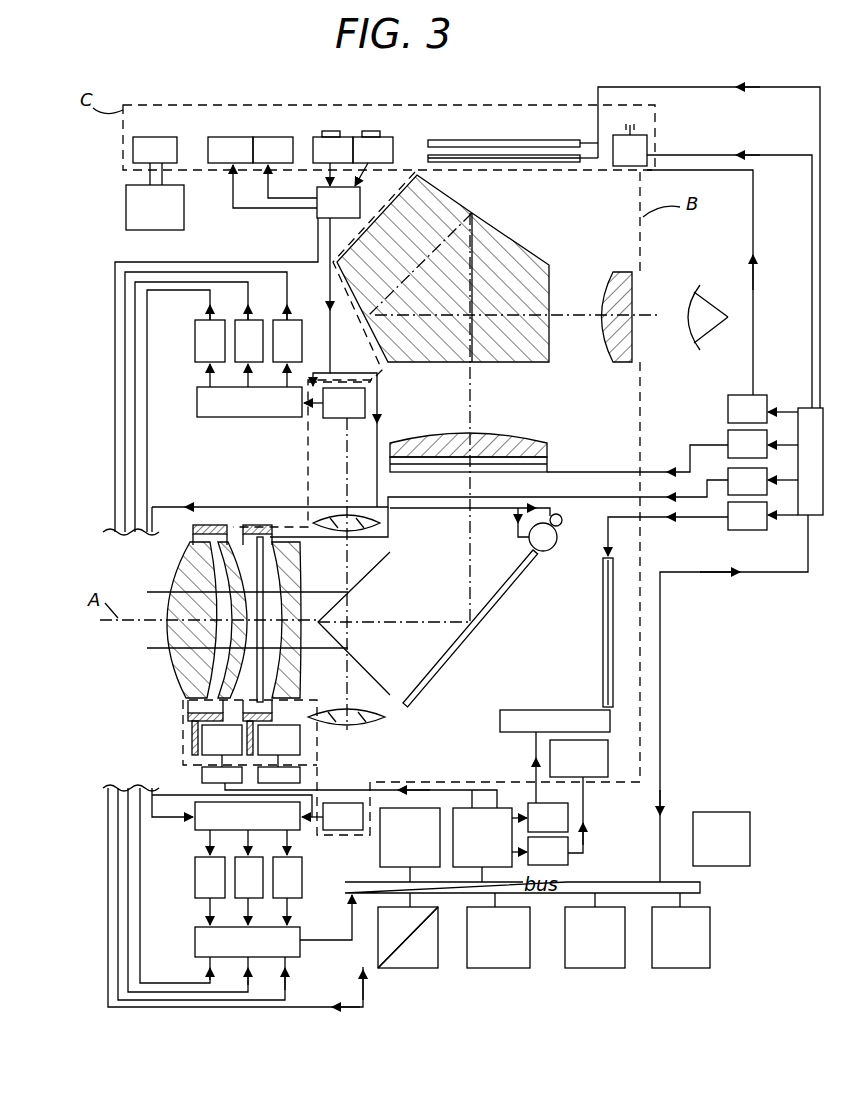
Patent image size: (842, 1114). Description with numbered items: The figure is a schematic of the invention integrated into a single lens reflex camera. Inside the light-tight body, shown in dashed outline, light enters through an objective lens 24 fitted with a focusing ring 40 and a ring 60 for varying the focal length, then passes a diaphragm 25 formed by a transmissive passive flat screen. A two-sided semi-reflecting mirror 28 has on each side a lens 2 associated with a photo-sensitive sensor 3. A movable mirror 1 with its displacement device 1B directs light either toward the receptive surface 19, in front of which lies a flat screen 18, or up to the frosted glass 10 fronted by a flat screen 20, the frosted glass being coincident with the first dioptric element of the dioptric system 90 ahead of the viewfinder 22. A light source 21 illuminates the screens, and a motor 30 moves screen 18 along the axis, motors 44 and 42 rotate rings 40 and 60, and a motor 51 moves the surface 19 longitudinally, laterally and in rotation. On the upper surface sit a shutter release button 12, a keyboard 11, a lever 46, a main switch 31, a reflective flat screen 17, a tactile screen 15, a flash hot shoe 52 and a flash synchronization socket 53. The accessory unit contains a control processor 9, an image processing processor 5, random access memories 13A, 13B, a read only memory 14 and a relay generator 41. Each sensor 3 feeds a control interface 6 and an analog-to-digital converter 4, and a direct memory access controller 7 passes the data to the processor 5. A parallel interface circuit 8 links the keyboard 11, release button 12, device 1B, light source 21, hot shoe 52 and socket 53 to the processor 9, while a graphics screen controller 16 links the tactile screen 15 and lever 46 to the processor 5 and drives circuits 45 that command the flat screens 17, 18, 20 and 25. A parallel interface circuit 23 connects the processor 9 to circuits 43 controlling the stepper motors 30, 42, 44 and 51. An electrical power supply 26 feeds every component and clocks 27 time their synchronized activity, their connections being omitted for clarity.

The movable mirror 1 is at (508, 592).
The displacement device 1B is at (546, 552).
The lens 2 is at (345, 520).
The photo-sensitive sensor 3 is at (333, 609).
The analog-to-digital converter 4 is at (213, 598).
The image processing processor 5 is at (498, 930).
The control interface 6 is at (232, 609).
The direct memory access controller 7 is at (235, 897).
The parallel interface circuit 8 is at (246, 359).
The control processor 9 is at (595, 930).
The frosted glass 10 is at (548, 456).
The keyboard 11 is at (373, 158).
The shutter release button 12 is at (333, 158).
The random access memory 13A is at (408, 930).
The random access memory 13B is at (408, 937).
The read only memory 14 is at (410, 845).
The tactile screen 15 is at (500, 140).
The graphics screen controller 16 is at (741, 645).
The reflective flat screen 17 is at (548, 163).
The flat screen 18 is at (600, 650).
The receptive surface 19 is at (615, 570).
The flat screen 20 is at (512, 472).
The light source 21 is at (562, 521).
The viewfinder 22 is at (640, 306).
The parallel interface circuit 23 is at (490, 845).
The objective lens 24 is at (292, 640).
The diaphragm 25 is at (262, 578).
The electrical power supply 26 is at (155, 196).
The clocks 27 is at (721, 839).
The two-sided semi-reflecting mirror 28 is at (372, 577).
The motor 30 is at (521, 712).
The main switch 31 is at (155, 150).
The focusing ring 40 is at (213, 525).
The relay generator 41 is at (681, 930).
The motor 42 is at (271, 733).
The control circuit 43 is at (202, 777).
The motor 44 is at (215, 733).
The flat screen command and control circuit 45 is at (475, 475).
The lever 46 is at (630, 145).
The motor 51 is at (579, 796).
The flash hot shoe 52 is at (262, 172).
The flash synchronization socket 53 is at (285, 167).
The focal length ring 60 is at (258, 525).
The dioptric system 90 is at (558, 368).